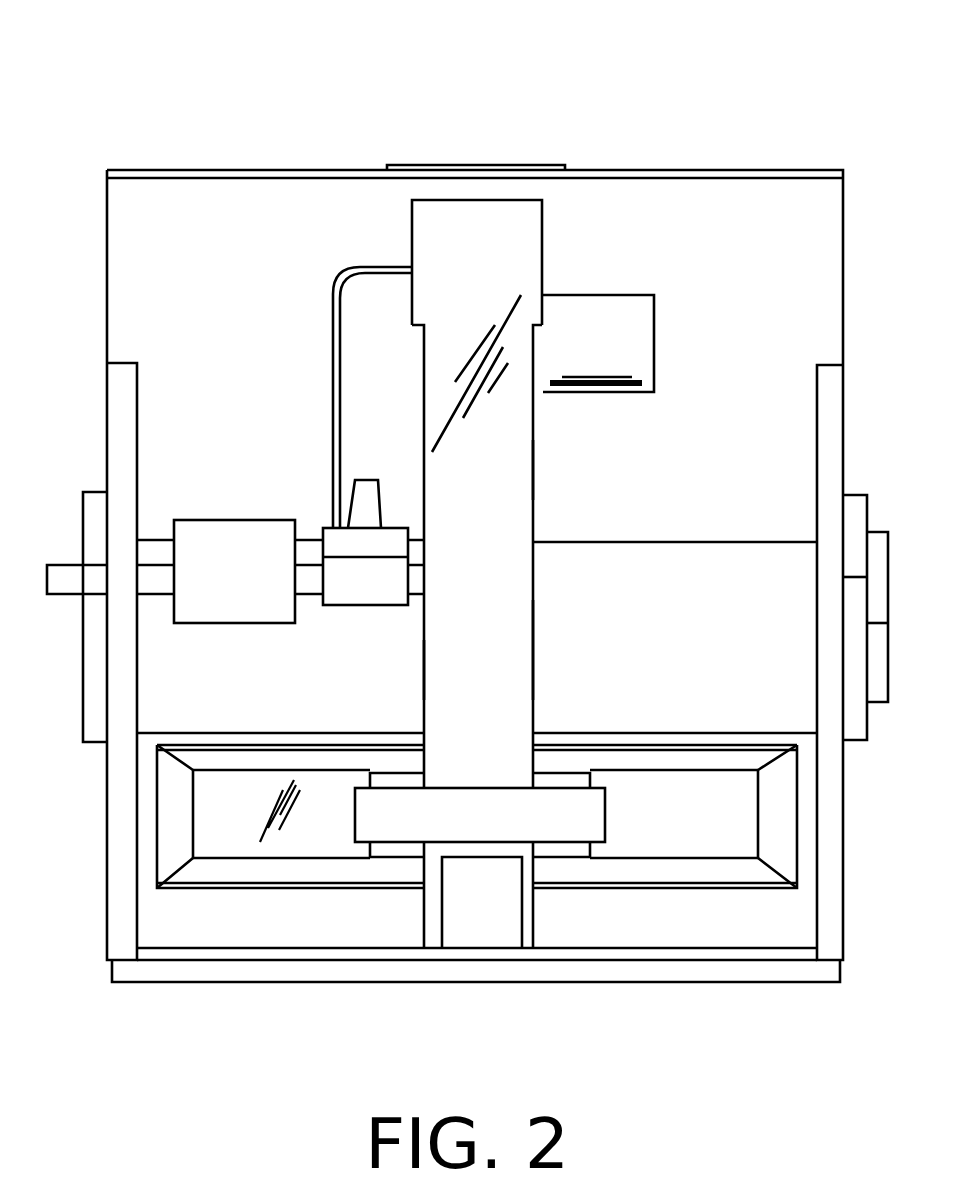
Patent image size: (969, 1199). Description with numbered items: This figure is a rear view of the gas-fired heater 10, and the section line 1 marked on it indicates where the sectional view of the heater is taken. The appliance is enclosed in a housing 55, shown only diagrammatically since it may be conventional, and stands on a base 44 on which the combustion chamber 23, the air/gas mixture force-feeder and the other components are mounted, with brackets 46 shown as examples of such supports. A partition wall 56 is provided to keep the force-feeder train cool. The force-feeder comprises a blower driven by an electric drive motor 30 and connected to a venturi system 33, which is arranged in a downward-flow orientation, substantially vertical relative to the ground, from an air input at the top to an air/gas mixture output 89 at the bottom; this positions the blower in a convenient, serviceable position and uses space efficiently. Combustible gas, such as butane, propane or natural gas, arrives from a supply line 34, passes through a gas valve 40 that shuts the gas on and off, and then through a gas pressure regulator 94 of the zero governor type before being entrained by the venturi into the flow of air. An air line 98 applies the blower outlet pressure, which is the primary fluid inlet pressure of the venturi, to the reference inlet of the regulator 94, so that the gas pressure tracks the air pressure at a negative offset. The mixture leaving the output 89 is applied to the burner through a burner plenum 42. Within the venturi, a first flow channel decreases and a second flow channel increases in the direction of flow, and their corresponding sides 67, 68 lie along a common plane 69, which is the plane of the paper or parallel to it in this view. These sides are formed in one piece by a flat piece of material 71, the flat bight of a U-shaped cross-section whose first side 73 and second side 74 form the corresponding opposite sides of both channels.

The section line 1— 1 is at (737, 107).
The gas-fired heater 10 is at (556, 166).
The combustion chamber 23 is at (874, 519).
The electric drive motor 30 is at (617, 367).
The venturi system 33 is at (541, 579).
The supply line 34 is at (75, 585).
The gas valve 40 is at (246, 595).
The burner plenum 42 is at (696, 833).
The base 44 is at (669, 948).
The brackets 46 is at (430, 909).
The housing 55 is at (191, 170).
The partition wall 56 is at (296, 340).
The side of first flow channel 67 is at (533, 420).
The side of second flow channel 68 is at (505, 656).
The common plane 69 is at (456, 286).
The flat piece of material 71 is at (499, 539).
The first side 73 is at (533, 473).
The second side 74 is at (424, 665).
The air/gas mixture output 89 is at (501, 837).
The gas pressure regulator 94 is at (388, 602).
The air line 98 is at (332, 392).